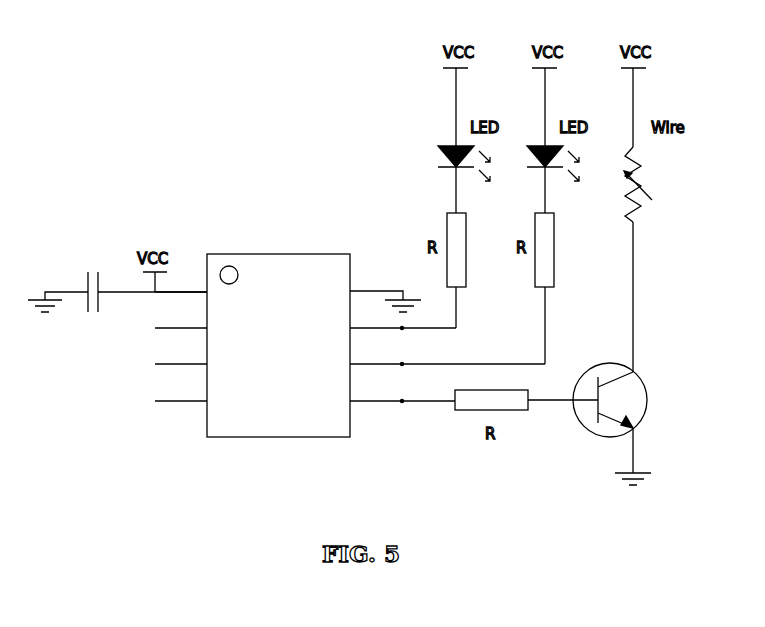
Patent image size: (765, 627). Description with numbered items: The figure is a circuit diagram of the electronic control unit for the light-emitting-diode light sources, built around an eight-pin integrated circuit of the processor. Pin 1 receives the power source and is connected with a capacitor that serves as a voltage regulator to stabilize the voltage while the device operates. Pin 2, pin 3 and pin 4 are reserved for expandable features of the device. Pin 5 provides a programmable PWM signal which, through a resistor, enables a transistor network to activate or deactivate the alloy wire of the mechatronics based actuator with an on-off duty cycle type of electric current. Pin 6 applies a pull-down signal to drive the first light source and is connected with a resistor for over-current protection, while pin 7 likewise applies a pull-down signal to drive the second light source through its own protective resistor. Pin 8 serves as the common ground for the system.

The pin 1 is at (181, 283).
The pin 2 is at (181, 319).
The pin 3 is at (181, 354).
The pin 4 is at (181, 391).
The pin 5 is at (402, 390).
The pin 6 is at (447, 354).
The pin 7 is at (403, 317).
The pin 8 is at (385, 291).